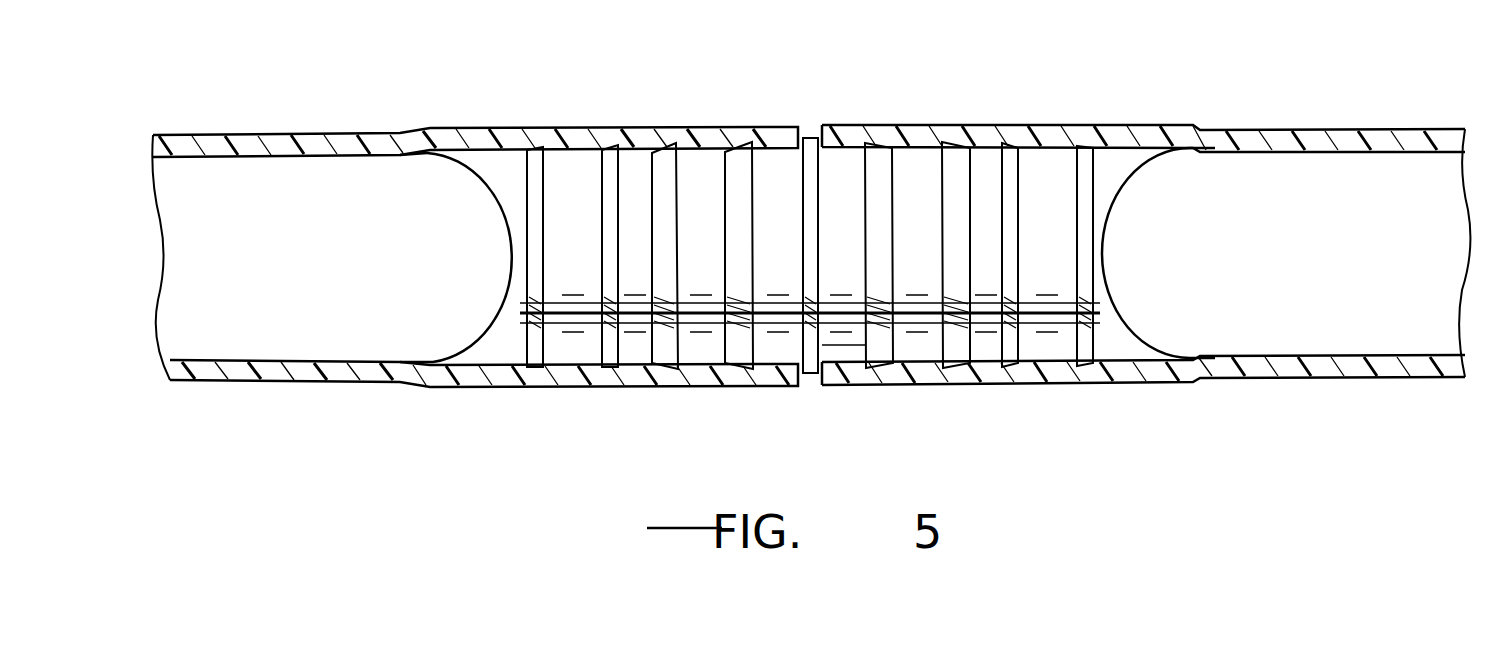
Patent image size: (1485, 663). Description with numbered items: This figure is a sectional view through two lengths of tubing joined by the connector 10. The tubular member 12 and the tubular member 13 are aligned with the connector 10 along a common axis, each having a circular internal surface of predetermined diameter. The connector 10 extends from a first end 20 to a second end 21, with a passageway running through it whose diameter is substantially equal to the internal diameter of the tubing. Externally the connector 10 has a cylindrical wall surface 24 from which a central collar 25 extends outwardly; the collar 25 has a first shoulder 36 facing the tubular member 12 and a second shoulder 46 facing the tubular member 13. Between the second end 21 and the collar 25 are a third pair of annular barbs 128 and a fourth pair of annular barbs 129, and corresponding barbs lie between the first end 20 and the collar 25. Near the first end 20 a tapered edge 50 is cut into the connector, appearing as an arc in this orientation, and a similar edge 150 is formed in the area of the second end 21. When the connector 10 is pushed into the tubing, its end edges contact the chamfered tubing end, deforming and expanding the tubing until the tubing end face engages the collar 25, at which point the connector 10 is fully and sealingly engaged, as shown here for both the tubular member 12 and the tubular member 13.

The connector 10 is at (692, 122).
The tubular member 12 is at (203, 152).
The tubular member 13 is at (1317, 127).
The first end 20 is at (432, 360).
The second end 21 is at (1192, 360).
The cylindrical wall surface 24 is at (840, 146).
The central collar 25 is at (813, 374).
The first shoulder 36 is at (784, 171).
The second shoulder 46 is at (838, 345).
The tapered edge 50 is at (517, 241).
The third pair of annular barbs 128 is at (1090, 124).
The fourth pair of annular barbs 129 is at (960, 141).
The edge 150 is at (1103, 238).